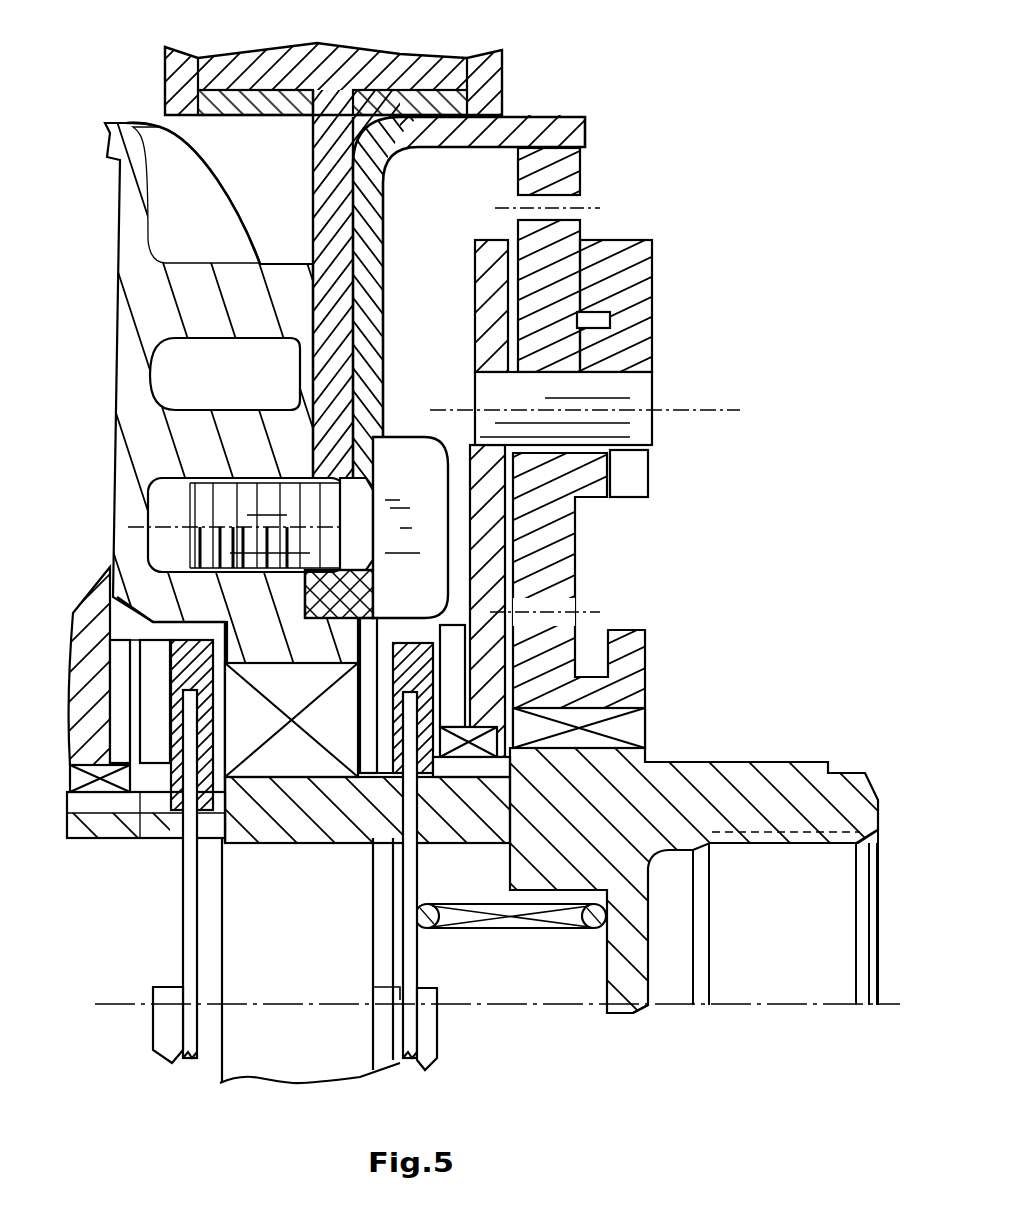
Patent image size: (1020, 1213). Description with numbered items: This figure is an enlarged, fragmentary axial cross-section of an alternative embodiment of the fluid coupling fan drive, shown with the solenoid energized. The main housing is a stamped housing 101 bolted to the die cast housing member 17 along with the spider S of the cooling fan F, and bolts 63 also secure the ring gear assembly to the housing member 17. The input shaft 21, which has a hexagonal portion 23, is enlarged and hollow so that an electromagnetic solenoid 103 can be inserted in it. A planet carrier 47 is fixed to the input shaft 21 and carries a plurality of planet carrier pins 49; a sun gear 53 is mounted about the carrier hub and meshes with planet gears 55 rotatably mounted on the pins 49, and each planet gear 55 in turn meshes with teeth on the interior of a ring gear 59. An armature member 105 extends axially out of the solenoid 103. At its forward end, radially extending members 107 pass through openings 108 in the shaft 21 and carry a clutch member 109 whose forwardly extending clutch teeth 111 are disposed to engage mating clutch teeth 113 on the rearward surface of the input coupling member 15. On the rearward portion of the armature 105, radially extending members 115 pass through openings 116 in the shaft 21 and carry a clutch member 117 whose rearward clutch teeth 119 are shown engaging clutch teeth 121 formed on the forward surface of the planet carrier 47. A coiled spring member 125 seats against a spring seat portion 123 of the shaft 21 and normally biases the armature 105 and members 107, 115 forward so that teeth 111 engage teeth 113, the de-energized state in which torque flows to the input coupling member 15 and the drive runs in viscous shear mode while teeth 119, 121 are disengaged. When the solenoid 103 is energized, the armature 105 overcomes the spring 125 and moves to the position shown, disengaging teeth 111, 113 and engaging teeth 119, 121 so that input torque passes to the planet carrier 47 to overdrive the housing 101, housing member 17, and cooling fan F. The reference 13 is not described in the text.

The cooling fan F is at (178, 80).
The spider S is at (333, 192).
The stamped housing 101 is at (530, 127).
The ring gear 59 is at (568, 173).
The spindle assembly 13 is at (724, 210).
The planet gears 55 is at (543, 288).
The planet carrier 47 is at (490, 318).
The planet carrier pins 49 is at (633, 396).
The bolts 63 is at (410, 460).
The housing member 17 is at (153, 305).
The clutch teeth 121 is at (450, 632).
The clutch teeth 119 is at (453, 677).
The clutch member 117 is at (413, 667).
The clutch member 109 is at (190, 662).
The clutch teeth 111 is at (153, 685).
The input coupling member 15 is at (83, 705).
The clutch teeth 113 is at (120, 727).
The sun gear 53 is at (622, 698).
The hexagonal portion 23 is at (752, 790).
The input shaft 21 is at (302, 803).
The radially extending members 107 is at (187, 913).
The openings 108 is at (223, 838).
The openings 116 is at (373, 838).
The armature member 105 is at (157, 1020).
The radially extending members 115 is at (407, 960).
The coiled spring member 125 is at (587, 933).
The electromagnetic solenoid 103 is at (272, 973).
The spring seat portion 123 is at (627, 980).